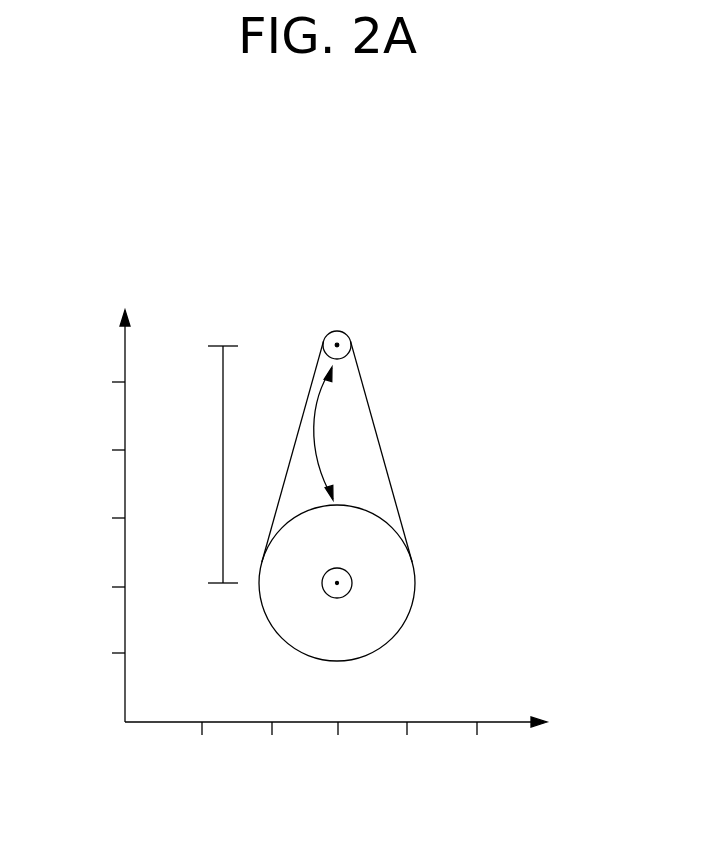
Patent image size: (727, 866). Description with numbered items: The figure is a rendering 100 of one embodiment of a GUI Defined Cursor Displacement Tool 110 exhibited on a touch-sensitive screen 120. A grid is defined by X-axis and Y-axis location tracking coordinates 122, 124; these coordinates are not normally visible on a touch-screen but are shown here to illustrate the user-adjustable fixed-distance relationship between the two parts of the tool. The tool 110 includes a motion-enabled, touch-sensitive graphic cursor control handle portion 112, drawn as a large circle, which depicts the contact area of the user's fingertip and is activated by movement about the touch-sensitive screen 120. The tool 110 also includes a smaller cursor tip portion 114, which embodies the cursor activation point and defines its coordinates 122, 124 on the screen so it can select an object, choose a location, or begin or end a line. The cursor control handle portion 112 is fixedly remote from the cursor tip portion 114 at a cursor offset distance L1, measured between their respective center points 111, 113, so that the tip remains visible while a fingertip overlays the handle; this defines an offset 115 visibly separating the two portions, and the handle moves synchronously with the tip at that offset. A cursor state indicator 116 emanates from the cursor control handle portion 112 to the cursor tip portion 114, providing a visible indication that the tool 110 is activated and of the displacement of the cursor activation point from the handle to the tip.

The rendering 100 is at (159, 188).
The GUI Defined Cursor Displacement Tool 110 is at (426, 343).
The center point of cursor control handle portion 111 is at (340, 585).
The cursor control handle portion 112 is at (280, 628).
The center point of cursor tip portion 113 is at (339, 344).
The cursor tip portion 114 is at (337, 331).
The offset 115 is at (337, 433).
The cursor state indicator 116 is at (311, 392).
The touch-sensitive screen 120 is at (549, 370).
The X-axis location tracking coordinate 122 is at (509, 733).
The Y-axis location tracking coordinate 124 is at (111, 357).